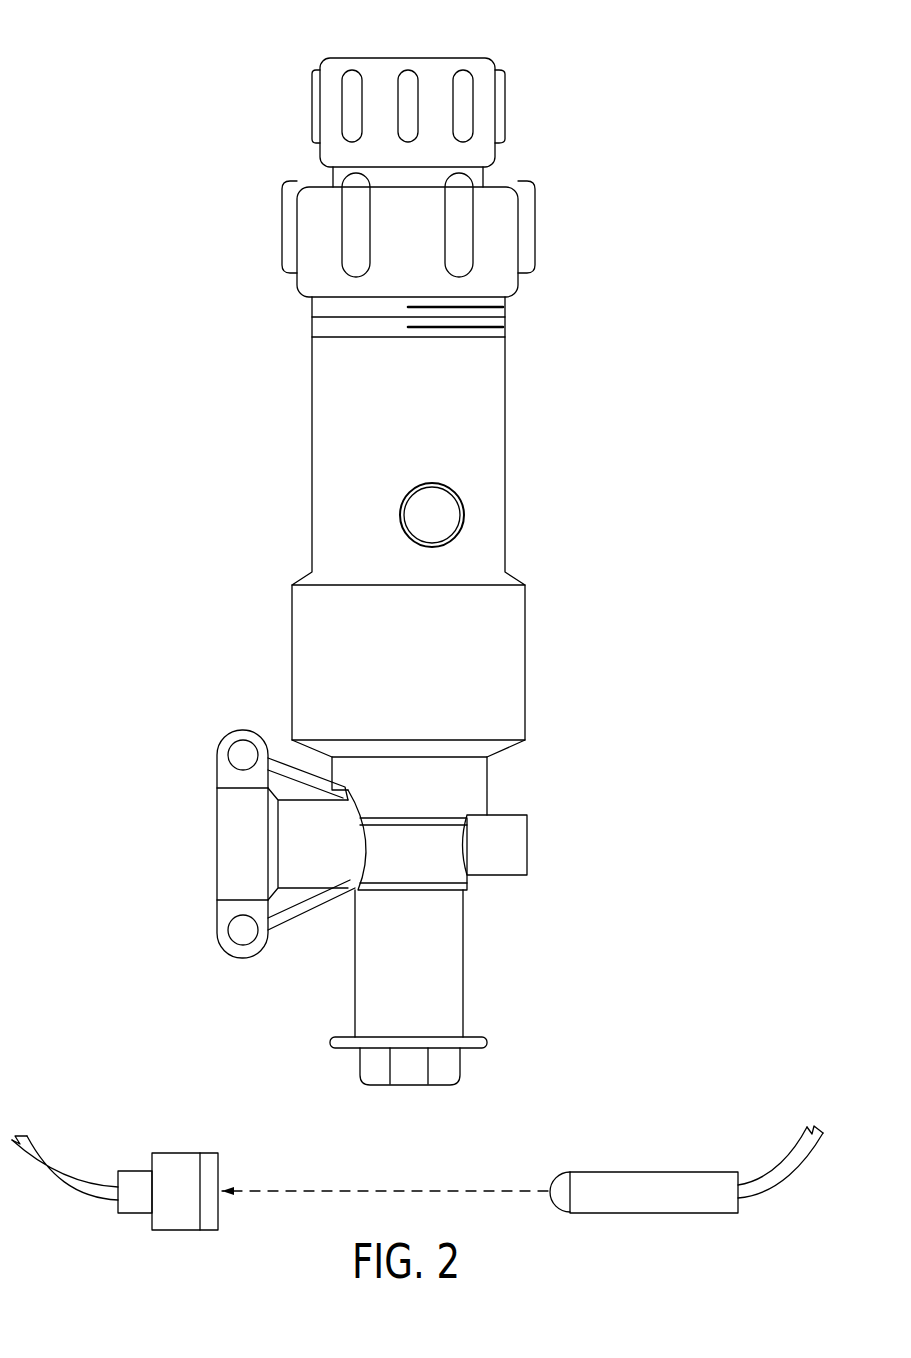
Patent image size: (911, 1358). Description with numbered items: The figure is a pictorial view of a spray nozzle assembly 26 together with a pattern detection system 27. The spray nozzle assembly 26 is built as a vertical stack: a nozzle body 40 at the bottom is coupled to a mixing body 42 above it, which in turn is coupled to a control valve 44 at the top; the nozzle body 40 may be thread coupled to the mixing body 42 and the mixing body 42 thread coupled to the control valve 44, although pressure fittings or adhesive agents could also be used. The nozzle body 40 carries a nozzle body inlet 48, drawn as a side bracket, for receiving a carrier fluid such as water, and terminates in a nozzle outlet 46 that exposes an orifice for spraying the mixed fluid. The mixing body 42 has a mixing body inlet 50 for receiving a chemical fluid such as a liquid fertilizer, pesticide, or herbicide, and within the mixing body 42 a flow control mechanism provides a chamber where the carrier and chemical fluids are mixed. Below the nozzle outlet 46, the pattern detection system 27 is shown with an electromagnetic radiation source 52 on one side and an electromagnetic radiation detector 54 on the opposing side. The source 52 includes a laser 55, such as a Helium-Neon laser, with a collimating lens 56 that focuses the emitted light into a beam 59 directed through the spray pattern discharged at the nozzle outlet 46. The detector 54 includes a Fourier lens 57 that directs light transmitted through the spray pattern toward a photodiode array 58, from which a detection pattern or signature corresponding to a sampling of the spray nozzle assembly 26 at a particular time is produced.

The spray nozzle assembly 26 is at (614, 42).
The control valve 44 is at (380, 82).
The mixing body 42 is at (332, 532).
The mixing body inlet 50 is at (450, 517).
The nozzle body inlet 48 is at (232, 848).
The nozzle body 40 is at (455, 966).
The nozzle outlet 46 is at (402, 1077).
The electromagnetic radiation detector 54 is at (175, 1131).
The Fourier lens 57 is at (213, 1175).
The photodiode array 58 is at (191, 1207).
The beam 59 is at (390, 1190).
The pattern detection system 27 is at (616, 1132).
The electromagnetic radiation source 52 is at (674, 1149).
The collimating lens 56 is at (558, 1188).
The laser 55 is at (671, 1207).